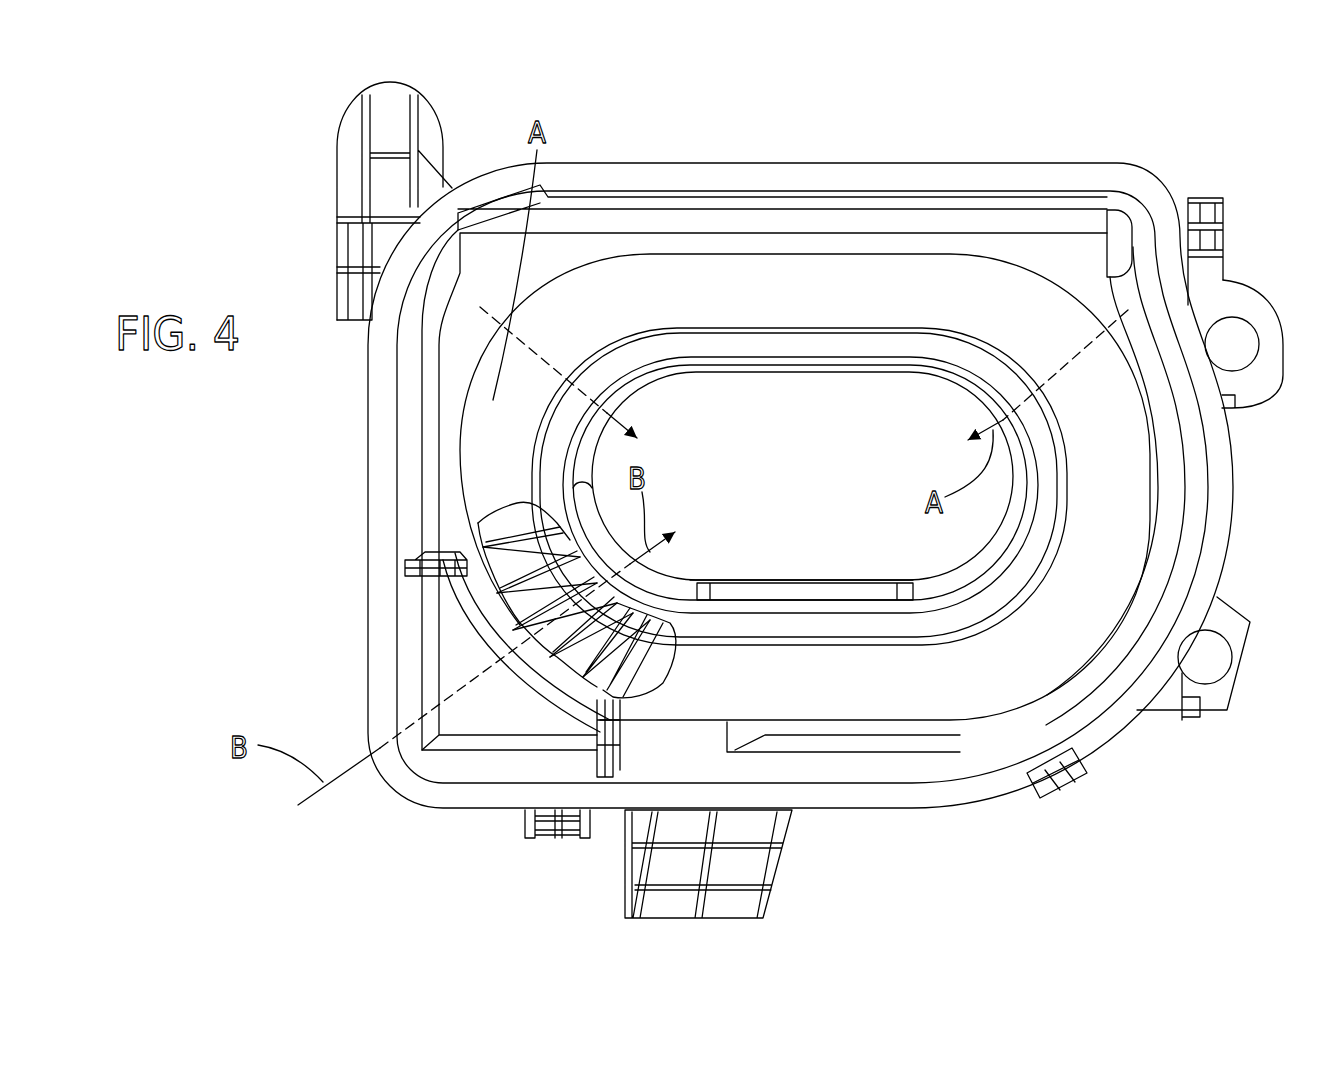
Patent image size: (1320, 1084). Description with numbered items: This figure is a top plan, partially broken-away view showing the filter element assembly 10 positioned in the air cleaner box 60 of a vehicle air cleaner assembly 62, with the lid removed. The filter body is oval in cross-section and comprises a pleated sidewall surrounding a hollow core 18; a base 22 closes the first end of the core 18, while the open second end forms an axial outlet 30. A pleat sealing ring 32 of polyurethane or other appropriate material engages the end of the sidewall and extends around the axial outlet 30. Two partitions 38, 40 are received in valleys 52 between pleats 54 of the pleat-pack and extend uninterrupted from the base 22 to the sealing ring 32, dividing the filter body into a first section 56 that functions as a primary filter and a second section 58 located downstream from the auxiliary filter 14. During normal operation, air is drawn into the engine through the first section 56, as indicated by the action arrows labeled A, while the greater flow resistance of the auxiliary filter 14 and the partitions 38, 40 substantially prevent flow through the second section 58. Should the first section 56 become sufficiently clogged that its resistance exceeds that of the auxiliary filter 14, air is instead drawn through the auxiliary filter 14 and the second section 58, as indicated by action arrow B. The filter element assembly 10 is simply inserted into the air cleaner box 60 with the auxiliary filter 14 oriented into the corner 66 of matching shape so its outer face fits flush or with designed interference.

The filter element assembly 10 is at (1087, 305).
The auxiliary filter 14 is at (463, 715).
The hollow core 18 is at (993, 503).
The base 22 is at (807, 492).
The axial outlet 30 is at (823, 373).
The pleat sealing ring 32 is at (970, 298).
The partition 38 is at (480, 547).
The partition 40 is at (628, 692).
The valleys 52 is at (527, 550).
The pleats 54 is at (547, 553).
The first section 56 is at (503, 530).
The second section 58 is at (507, 702).
The air cleaner box 60 is at (748, 160).
The air cleaner assembly 62 is at (1128, 793).
The corner 66 is at (460, 690).